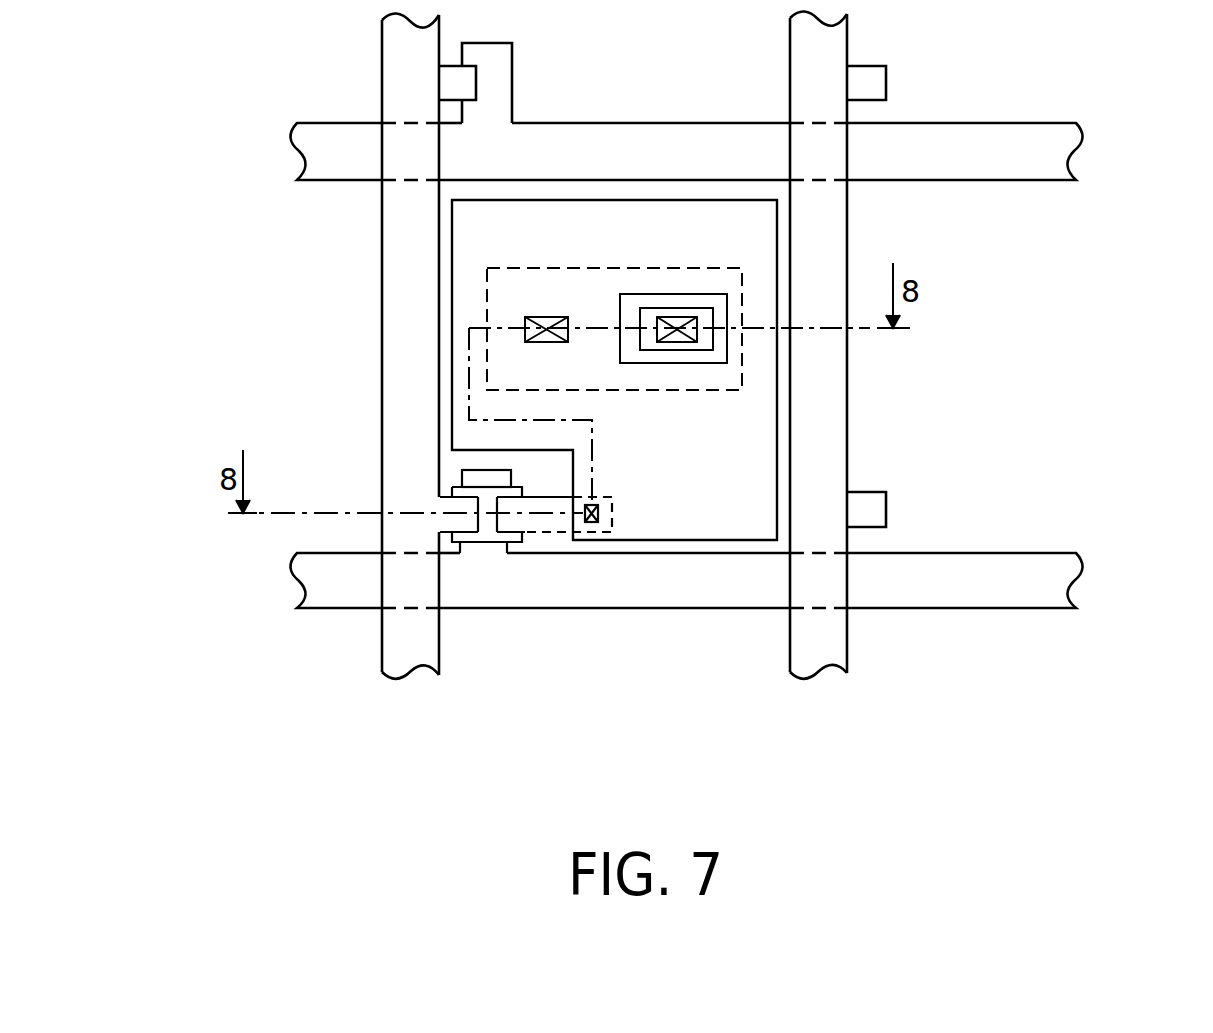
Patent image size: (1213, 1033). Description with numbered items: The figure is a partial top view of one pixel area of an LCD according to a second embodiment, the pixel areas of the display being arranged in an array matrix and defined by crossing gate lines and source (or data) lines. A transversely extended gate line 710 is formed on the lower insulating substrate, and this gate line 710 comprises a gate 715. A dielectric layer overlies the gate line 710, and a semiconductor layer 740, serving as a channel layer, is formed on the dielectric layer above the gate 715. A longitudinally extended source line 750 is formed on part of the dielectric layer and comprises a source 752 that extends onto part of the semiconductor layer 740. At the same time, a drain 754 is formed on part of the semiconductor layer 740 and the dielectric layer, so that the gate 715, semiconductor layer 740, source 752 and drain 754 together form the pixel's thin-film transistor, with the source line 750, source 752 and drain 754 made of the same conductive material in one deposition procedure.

The gate line 710 is at (1073, 150).
The source line 750 is at (413, 672).
The gate 715 is at (464, 481).
The semiconductor layer 740 is at (452, 490).
The source 752 is at (462, 523).
The drain 754 is at (538, 520).